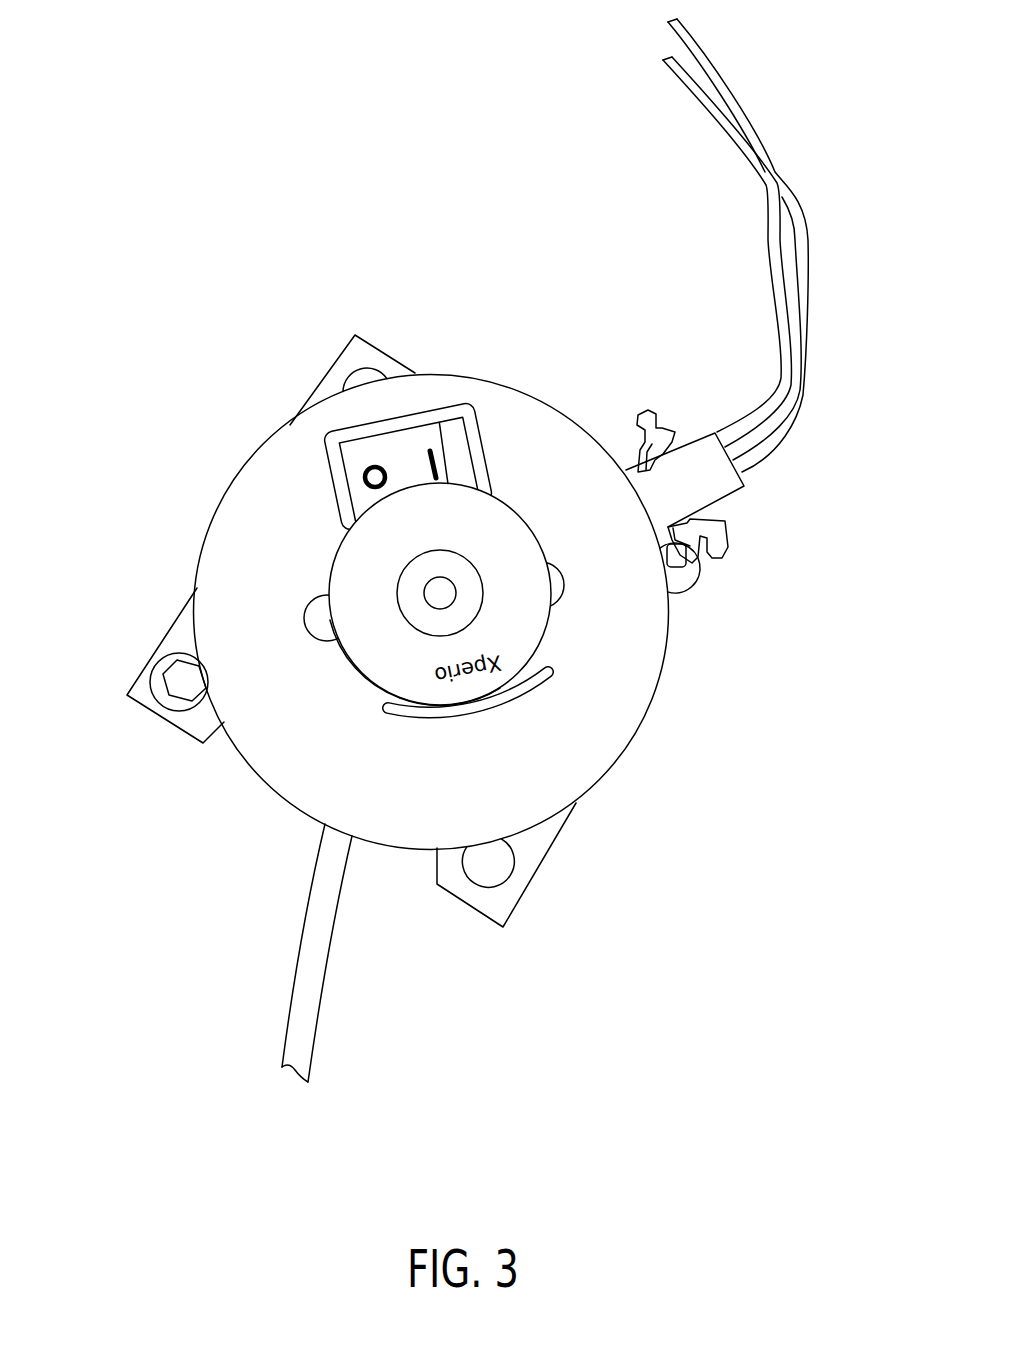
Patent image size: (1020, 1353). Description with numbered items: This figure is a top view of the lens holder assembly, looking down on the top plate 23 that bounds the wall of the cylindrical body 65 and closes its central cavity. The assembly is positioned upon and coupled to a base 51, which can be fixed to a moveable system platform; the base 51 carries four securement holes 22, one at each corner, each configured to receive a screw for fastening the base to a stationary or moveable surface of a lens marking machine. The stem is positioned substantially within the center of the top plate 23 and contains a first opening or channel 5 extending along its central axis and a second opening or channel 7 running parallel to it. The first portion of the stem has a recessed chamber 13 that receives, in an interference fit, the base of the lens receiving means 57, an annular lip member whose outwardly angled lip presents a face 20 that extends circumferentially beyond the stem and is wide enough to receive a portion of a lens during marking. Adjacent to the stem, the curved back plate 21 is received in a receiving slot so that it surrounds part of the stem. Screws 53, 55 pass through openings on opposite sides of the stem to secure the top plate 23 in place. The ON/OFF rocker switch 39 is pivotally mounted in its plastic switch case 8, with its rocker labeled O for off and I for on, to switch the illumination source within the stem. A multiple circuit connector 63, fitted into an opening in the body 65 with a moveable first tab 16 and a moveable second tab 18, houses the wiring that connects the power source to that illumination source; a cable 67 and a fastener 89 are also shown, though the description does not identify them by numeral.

The first opening or channel 5 is at (443, 590).
The second opening or channel 7 is at (450, 707).
The switch case 8 is at (465, 406).
The recessed chamber 13 is at (413, 583).
The first tab 16 is at (720, 535).
The second tab 18 is at (651, 425).
The face 20 is at (350, 578).
The back plate 21 is at (540, 697).
The securement hole 22 is at (362, 376).
The top plate 23 is at (458, 798).
The ON/OFF rocker switch 39 is at (352, 458).
The base 51 is at (140, 692).
The screw 53 is at (557, 585).
The screw 55 is at (318, 630).
The lens receiving means 57 is at (364, 680).
The multiple circuit connector 63 is at (705, 481).
The body 65 is at (222, 498).
The cable 67 is at (303, 973).
The fastener 89 is at (166, 718).